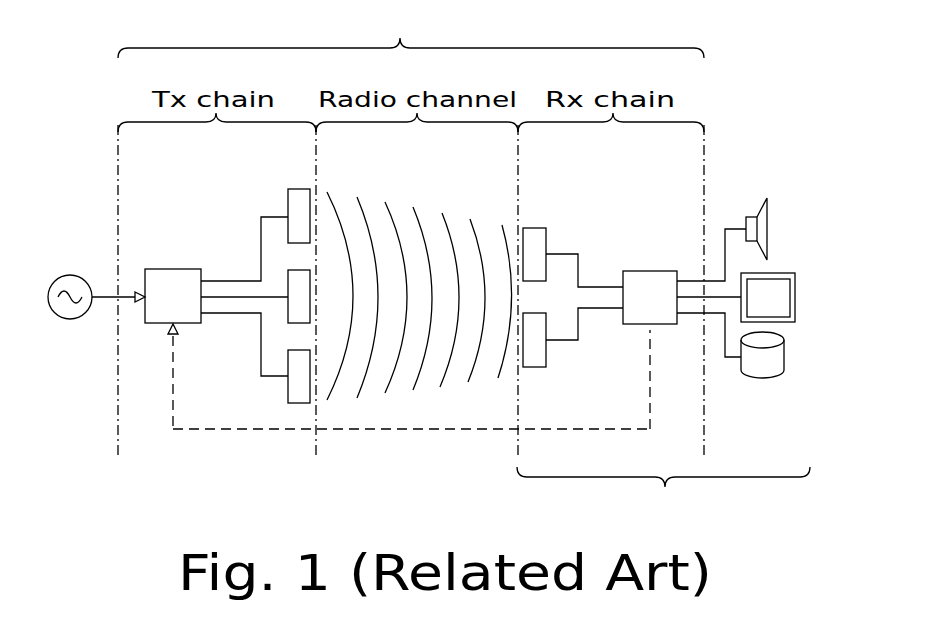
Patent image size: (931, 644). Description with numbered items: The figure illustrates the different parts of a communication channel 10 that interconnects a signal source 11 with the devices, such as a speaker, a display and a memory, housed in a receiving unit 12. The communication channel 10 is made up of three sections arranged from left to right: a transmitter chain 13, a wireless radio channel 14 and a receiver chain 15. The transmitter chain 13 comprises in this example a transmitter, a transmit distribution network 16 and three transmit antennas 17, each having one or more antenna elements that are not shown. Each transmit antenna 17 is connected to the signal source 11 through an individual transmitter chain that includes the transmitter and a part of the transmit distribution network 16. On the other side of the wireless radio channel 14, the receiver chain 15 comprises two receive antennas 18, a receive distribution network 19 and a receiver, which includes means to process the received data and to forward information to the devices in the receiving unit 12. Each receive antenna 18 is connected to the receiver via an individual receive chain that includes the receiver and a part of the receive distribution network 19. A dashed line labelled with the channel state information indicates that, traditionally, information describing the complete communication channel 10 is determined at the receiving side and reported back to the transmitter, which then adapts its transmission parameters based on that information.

The communication channel 10 is at (411, 33).
The signal source 11 is at (73, 319).
The receiving unit 12 is at (663, 355).
The transmitter chain 13 is at (232, 162).
The wireless radio channel 14 is at (438, 162).
The receiver chain 15 is at (634, 162).
The transmit distribution network 16 is at (230, 348).
The transmit antennas 17 is at (294, 283).
The receive antennas 18 is at (529, 232).
The receive distribution network 19 is at (592, 259).